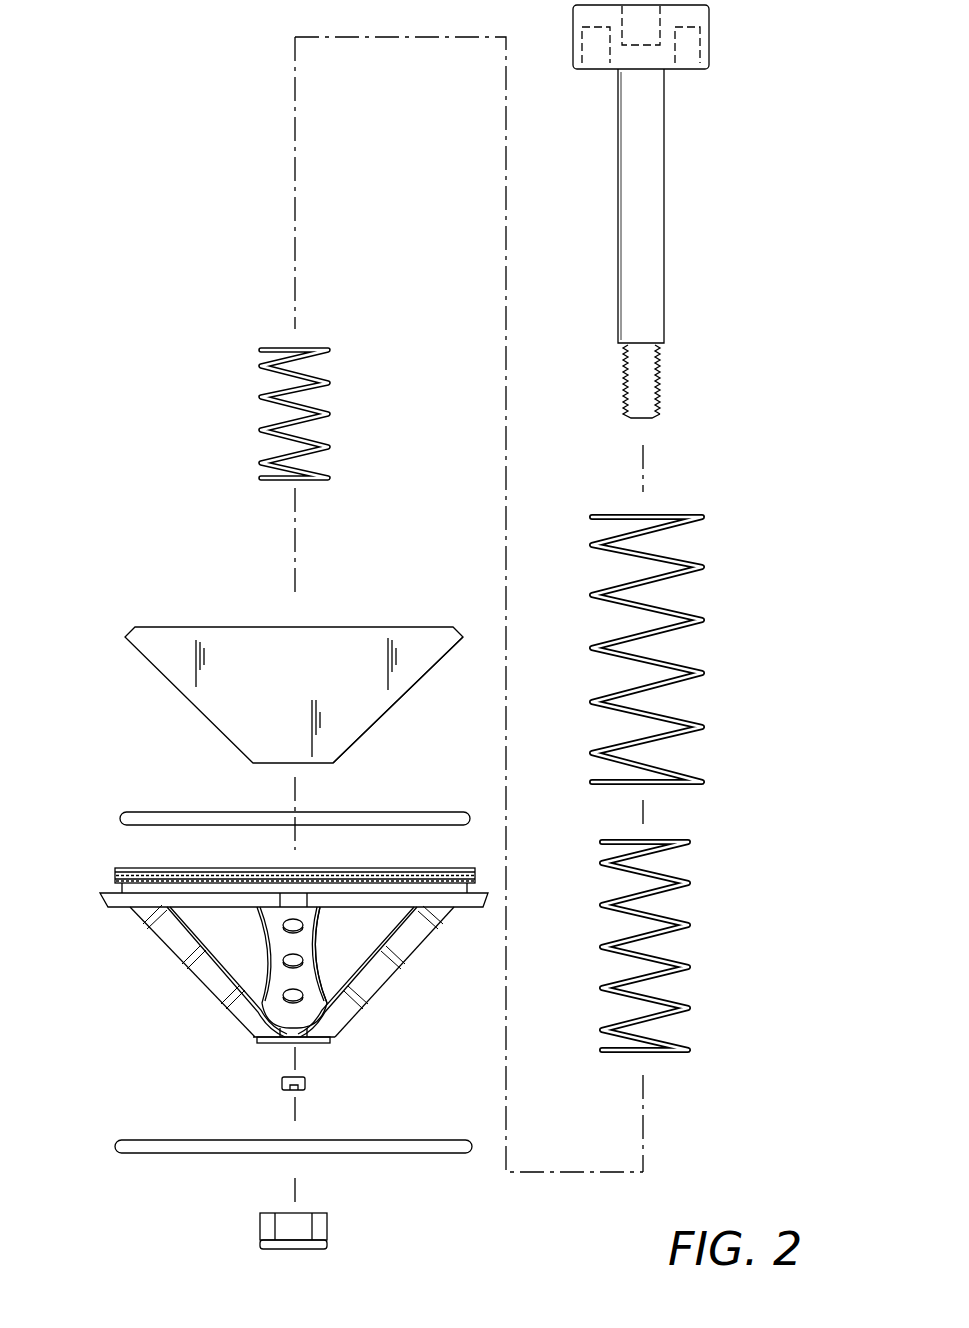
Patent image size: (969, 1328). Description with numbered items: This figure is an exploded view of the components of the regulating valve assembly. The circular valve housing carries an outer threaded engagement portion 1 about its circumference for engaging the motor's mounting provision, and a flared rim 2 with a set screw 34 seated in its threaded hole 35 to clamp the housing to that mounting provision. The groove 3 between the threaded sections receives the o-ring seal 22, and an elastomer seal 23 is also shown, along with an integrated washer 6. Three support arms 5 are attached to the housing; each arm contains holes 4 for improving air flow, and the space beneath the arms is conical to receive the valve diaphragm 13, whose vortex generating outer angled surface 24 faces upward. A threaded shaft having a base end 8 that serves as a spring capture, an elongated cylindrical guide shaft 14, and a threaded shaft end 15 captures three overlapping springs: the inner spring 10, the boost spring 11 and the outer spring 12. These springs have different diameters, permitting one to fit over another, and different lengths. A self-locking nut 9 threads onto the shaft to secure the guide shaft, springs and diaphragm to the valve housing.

The threaded engagement portion 1 is at (100, 884).
The flared rim 2 is at (110, 909).
The groove 3 is at (113, 876).
The holes in support arm 4 is at (280, 963).
The support arm 5 is at (161, 947).
The integrated washer 6 is at (258, 1048).
The base end of shaft and spring capture 8 is at (712, 34).
The shaft mounting self-locking nut 9 is at (255, 1229).
The inner spring 10 is at (703, 936).
The boost spring 11 is at (258, 424).
The outer spring 12 is at (703, 553).
The valve diaphragm 13 is at (385, 716).
The guide shaft 14 is at (670, 201).
The threaded shaft end 15 is at (666, 376).
The o-ring seal 22 is at (136, 1138).
The elastomer seal 23 is at (115, 812).
The vortex generating outer angled surface of diaphragm 24 is at (134, 624).
The set screw 34 is at (284, 1093).
The threaded hole for set screw 35 is at (318, 913).